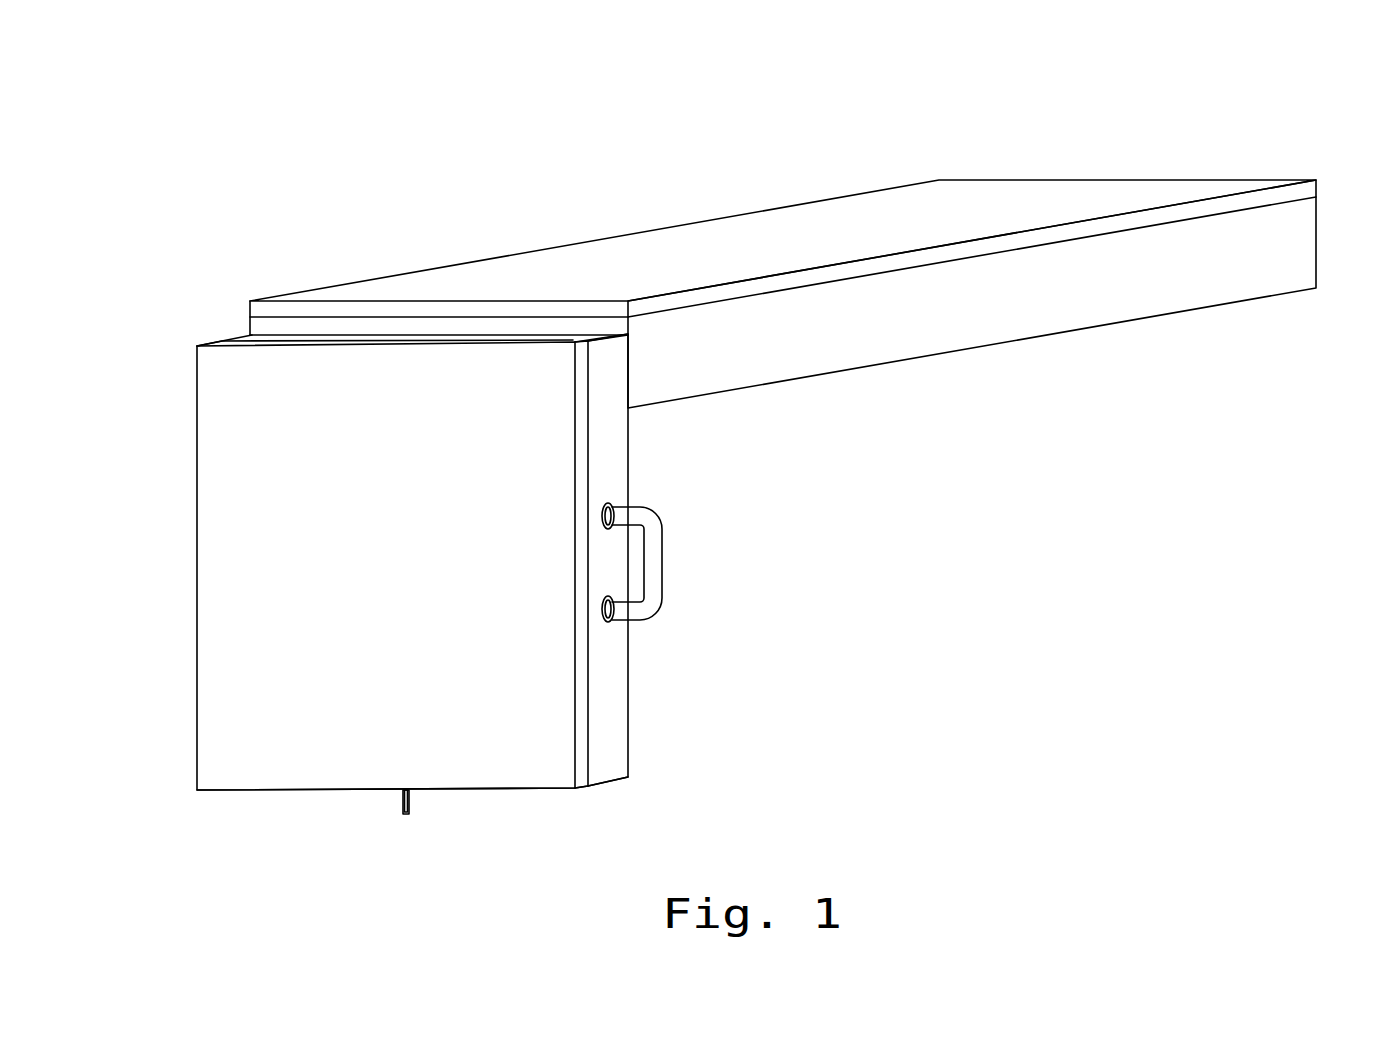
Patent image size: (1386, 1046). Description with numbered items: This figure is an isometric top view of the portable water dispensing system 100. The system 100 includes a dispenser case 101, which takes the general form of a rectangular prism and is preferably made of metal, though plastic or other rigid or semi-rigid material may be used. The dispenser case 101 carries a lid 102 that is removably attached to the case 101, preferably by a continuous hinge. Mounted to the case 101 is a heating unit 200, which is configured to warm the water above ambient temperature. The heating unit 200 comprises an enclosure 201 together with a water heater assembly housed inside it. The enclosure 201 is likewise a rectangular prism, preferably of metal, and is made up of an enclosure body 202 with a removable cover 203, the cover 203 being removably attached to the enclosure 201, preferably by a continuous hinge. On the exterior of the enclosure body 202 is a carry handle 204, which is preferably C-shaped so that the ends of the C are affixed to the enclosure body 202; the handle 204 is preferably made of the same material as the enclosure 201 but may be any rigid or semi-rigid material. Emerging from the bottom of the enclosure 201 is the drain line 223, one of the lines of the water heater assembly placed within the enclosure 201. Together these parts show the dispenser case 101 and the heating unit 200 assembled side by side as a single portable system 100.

The portable water dispensing system 100 is at (818, 224).
The dispenser case 101 is at (1312, 290).
The lid 102 is at (1097, 190).
The heating unit 200 is at (481, 598).
The enclosure 201 is at (618, 782).
The enclosure body 202 is at (620, 735).
The removable cover 203 is at (277, 738).
The carry handle 204 is at (645, 585).
The drain line 223 is at (407, 815).